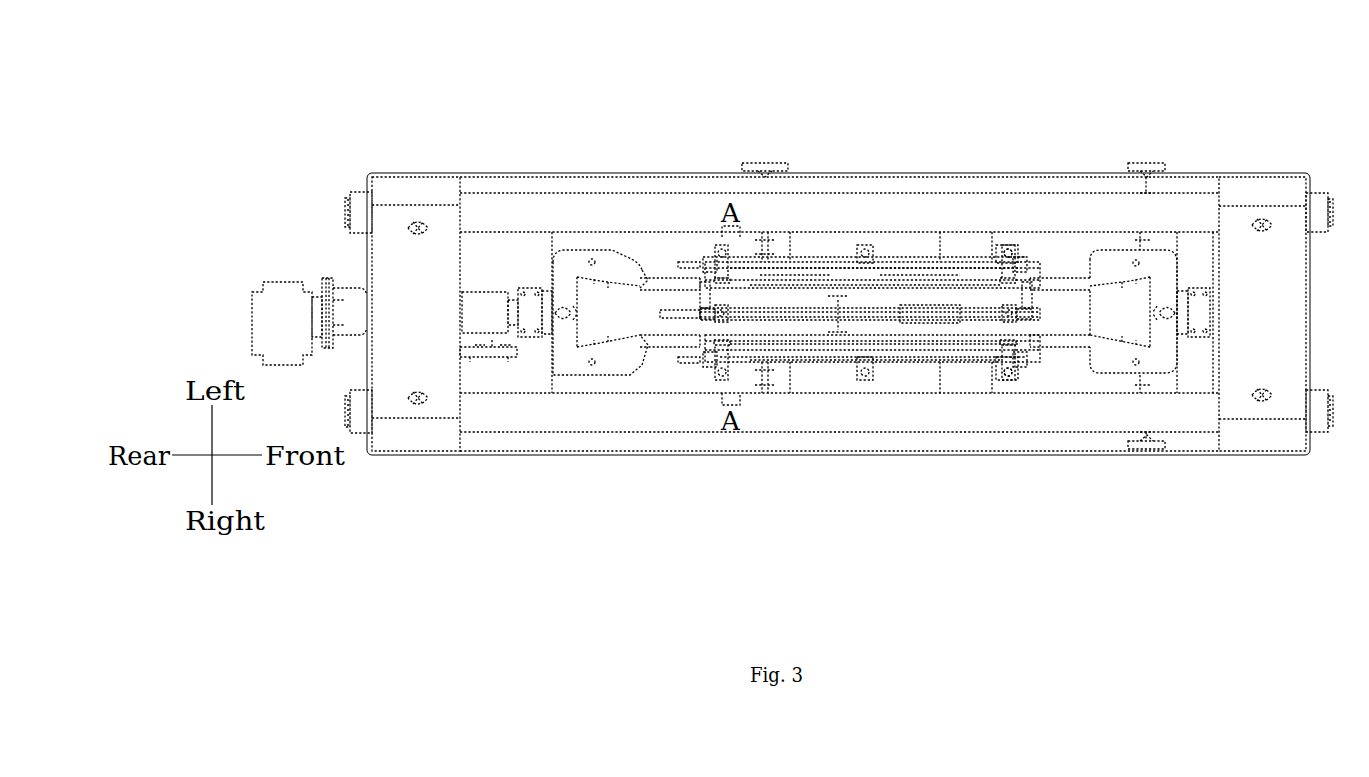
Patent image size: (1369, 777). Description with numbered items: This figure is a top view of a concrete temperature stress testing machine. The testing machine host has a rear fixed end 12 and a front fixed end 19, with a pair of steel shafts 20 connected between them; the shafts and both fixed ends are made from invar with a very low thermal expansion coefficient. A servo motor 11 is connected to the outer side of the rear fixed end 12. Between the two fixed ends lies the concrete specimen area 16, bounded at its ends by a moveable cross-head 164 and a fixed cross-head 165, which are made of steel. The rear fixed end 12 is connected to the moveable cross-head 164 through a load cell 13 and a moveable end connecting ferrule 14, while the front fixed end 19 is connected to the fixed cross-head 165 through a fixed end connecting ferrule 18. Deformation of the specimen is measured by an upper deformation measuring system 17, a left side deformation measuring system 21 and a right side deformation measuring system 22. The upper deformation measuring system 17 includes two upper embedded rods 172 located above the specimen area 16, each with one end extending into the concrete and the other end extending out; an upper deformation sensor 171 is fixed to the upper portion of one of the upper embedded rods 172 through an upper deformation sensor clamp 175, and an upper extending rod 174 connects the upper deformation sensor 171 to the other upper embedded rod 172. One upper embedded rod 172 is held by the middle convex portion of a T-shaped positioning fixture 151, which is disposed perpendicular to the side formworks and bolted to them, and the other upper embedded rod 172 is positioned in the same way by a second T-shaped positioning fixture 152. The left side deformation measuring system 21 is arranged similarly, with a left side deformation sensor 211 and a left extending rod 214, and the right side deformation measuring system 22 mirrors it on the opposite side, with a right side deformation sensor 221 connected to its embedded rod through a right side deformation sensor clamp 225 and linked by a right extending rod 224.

The servo motor 11 is at (270, 285).
The rear fixed end 12 is at (388, 300).
The load cell 13 is at (493, 300).
The moveable end connecting ferrule 14 is at (524, 290).
The concrete specimen area 16 is at (810, 300).
The upper deformation measuring system 17 is at (838, 322).
The fixed end connecting ferrule 18 is at (1199, 342).
The front fixed end 19 is at (1258, 281).
The steel shafts 20 is at (897, 413).
The left side deformation measuring system 21 is at (887, 257).
The right side deformation measuring system 22 is at (773, 367).
The T-shaped positioning fixture 151 is at (700, 287).
The T-shaped positioning fixture 152 is at (1034, 321).
The moveable cross-head 164 is at (612, 263).
The fixed cross-head 165 is at (1129, 263).
The upper deformation sensor 171 is at (682, 317).
The upper embedded rods 172 is at (1007, 310).
The upper extending rod 174 is at (930, 313).
The upper deformation sensor clamp 175 is at (690, 373).
The left side deformation sensor 211 is at (692, 265).
The left extending rod 214 is at (835, 262).
The right side deformation sensor 221 is at (678, 358).
The right extending rod 224 is at (920, 363).
The lower right clamp block 225 is at (703, 378).